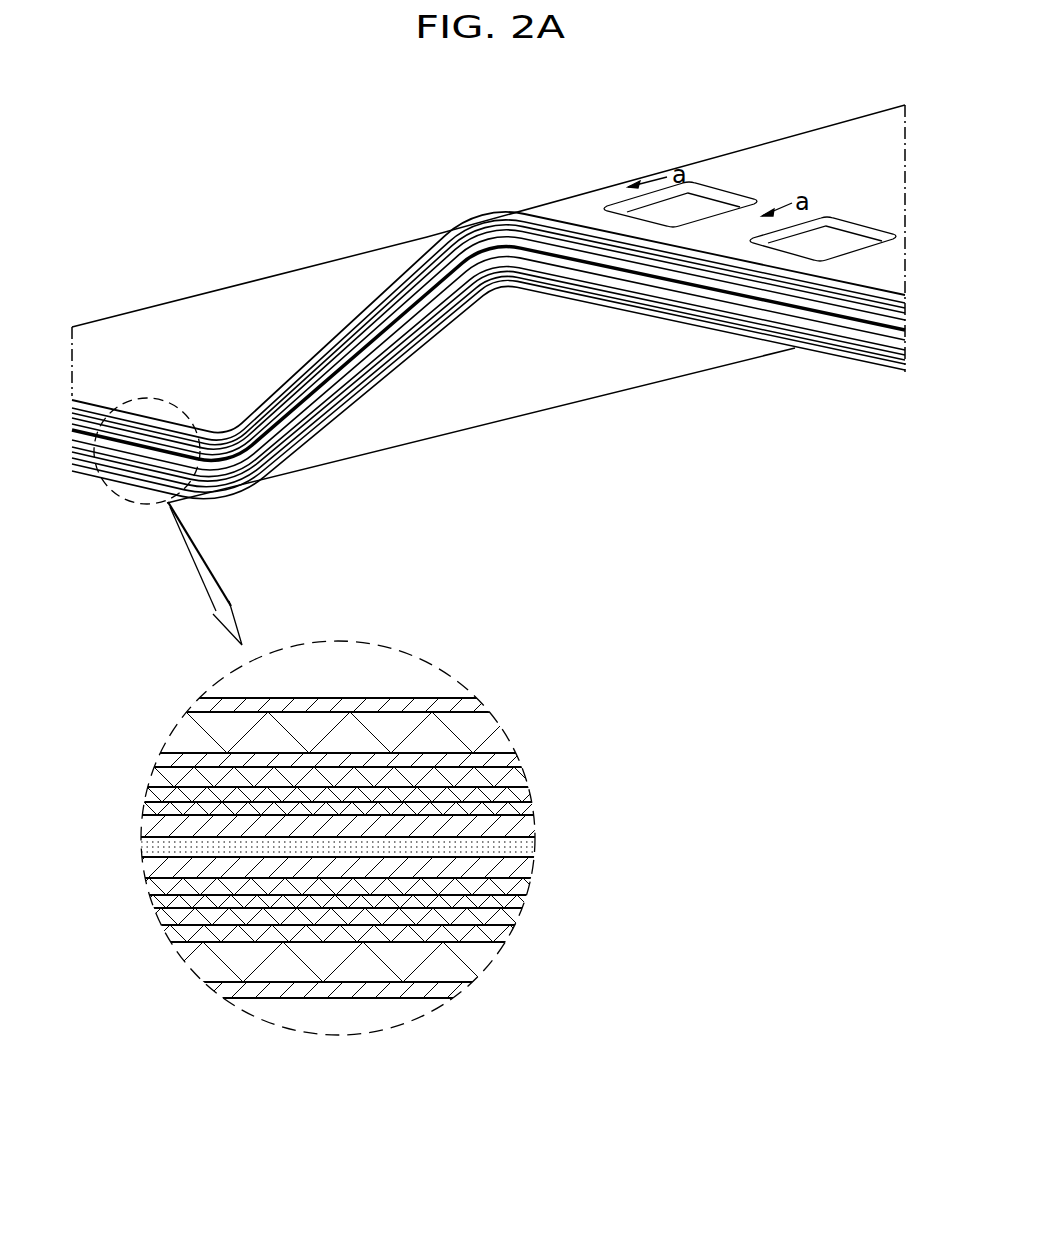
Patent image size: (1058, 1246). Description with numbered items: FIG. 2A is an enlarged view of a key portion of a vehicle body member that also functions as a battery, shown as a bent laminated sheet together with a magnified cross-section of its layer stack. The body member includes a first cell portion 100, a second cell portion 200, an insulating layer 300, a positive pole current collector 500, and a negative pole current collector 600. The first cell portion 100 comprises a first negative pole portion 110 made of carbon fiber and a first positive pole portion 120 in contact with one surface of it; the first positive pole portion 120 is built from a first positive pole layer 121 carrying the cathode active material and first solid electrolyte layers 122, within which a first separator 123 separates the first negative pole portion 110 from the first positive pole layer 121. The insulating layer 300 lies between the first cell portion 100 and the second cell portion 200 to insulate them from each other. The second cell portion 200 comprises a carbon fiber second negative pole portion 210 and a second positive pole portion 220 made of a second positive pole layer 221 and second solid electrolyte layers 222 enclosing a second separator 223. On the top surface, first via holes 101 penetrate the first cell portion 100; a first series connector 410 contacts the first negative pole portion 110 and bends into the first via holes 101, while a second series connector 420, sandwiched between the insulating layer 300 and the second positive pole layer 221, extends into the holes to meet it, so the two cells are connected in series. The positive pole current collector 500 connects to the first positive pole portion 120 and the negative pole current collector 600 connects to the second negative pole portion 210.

The first series connector 410 is at (585, 207).
The first via hole 101 is at (840, 242).
The first cell portion 100 is at (732, 740).
The first negative pole portion 110 is at (478, 732).
The first positive pole portion 120 is at (647, 698).
The first solid electrolyte layer 122 is at (495, 763).
The first separator 123 is at (513, 778).
The first positive pole layer 121 is at (520, 808).
The positive pole current collector 500 is at (157, 823).
The insulating layer 300 is at (158, 848).
The second series connector 420 is at (158, 868).
The second cell portion 200 is at (730, 957).
The second positive pole portion 220 is at (670, 877).
The second positive pole layer 221 is at (523, 887).
The second solid electrolyte layer 222 is at (519, 900).
The second separator 223 is at (490, 912).
The second negative pole portion 210 is at (465, 963).
The negative pole current collector 600 is at (412, 990).